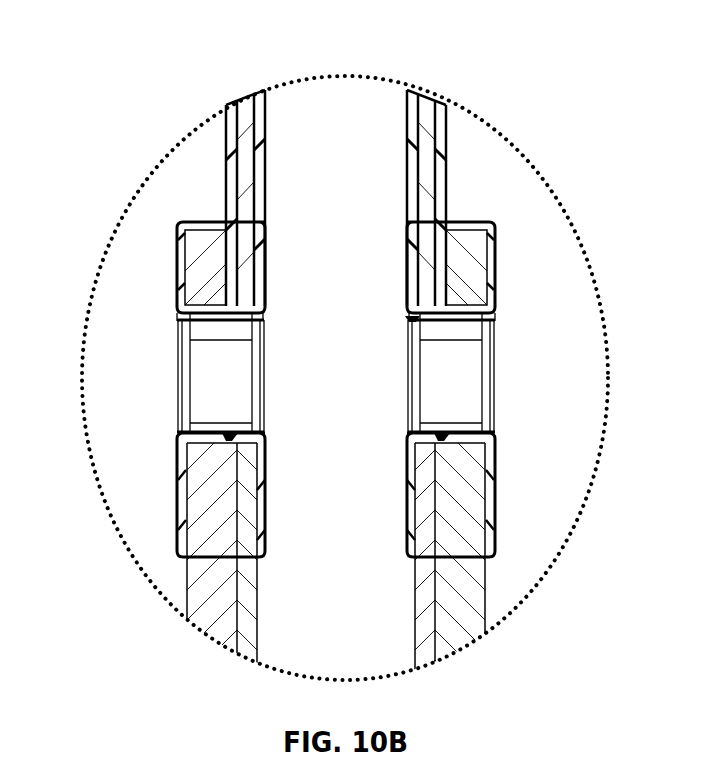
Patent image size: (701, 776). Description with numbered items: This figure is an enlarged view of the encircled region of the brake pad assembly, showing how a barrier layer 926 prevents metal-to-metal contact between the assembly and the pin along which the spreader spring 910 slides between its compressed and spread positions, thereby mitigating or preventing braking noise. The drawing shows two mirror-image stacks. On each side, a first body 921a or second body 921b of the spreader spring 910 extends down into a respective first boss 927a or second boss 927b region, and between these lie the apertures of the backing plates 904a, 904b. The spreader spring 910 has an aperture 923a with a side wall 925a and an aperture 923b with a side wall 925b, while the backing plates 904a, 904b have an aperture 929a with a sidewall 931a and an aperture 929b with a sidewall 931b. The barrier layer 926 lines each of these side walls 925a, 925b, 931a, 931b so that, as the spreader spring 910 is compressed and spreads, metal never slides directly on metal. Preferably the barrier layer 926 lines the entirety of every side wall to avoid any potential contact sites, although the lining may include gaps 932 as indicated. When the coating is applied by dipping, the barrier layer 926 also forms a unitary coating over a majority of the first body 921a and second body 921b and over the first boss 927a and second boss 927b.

The spreader spring 910 is at (318, 371).
The first body 921a is at (452, 167).
The second body 921b is at (227, 173).
The barrier layer 926 is at (405, 139).
The sidewall 931a is at (442, 266).
The sidewall 931b is at (188, 241).
The side wall 925a is at (425, 300).
The side wall 925b is at (237, 302).
The aperture 923a is at (424, 380).
The aperture 923b is at (205, 351).
The aperture 929a is at (469, 383).
The aperture 929b is at (217, 349).
The gaps 932 is at (405, 318).
The first boss 927a is at (460, 467).
The second boss 927b is at (222, 492).
The backing plate 904a is at (450, 618).
The backing plate 904b is at (205, 607).